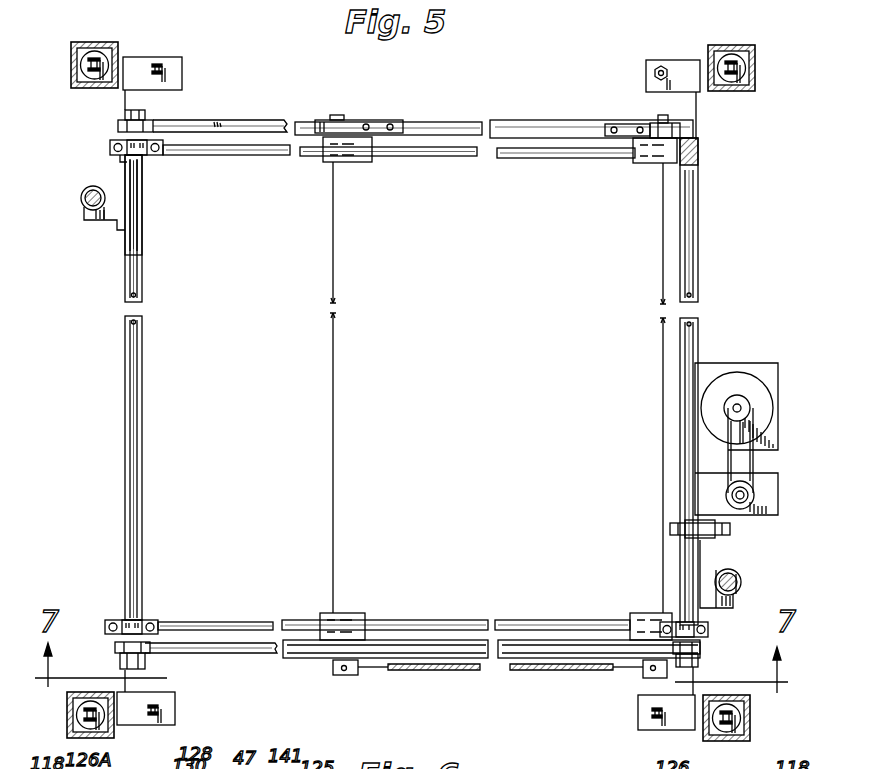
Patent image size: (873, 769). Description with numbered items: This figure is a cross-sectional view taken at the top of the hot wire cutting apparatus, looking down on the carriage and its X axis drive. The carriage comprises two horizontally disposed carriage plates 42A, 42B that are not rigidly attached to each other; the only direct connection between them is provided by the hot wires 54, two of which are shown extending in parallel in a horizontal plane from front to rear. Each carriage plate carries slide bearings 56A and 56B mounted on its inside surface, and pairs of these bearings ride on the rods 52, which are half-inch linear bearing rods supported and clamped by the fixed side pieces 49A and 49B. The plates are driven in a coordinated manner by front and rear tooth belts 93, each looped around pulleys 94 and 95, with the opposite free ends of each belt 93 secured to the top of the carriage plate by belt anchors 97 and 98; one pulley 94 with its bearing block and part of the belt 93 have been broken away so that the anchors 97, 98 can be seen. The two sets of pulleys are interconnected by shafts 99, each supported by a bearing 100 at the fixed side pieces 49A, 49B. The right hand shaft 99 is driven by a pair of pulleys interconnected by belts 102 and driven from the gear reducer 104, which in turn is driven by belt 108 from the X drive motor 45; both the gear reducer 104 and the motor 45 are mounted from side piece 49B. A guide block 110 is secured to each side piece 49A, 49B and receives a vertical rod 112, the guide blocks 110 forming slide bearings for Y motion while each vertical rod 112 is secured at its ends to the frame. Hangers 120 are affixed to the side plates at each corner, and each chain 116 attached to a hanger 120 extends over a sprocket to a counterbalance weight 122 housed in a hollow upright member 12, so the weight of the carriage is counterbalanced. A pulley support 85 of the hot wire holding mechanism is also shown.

The upright member 12 is at (108, 40).
The chain 116 is at (77, 48).
The counterbalance weight 122 is at (83, 88).
The hanger 120 is at (178, 65).
The pulley 94 is at (125, 114).
The tooth belt 93 is at (237, 125).
The belt anchor 97 is at (385, 120).
The belt anchor 98 is at (617, 124).
The bearing 100 is at (110, 147).
The rod 52 is at (538, 158).
The carriage plate 42B is at (520, 120).
The carriage plate 42A is at (512, 640).
The slide bearing 56B is at (352, 162).
The slide bearing 56A is at (352, 613).
The pulley support 85 is at (345, 675).
The pulley 95 is at (700, 660).
The side piece 49A is at (125, 300).
The side piece 49B is at (698, 300).
The shaft 99 is at (130, 378).
The hot wire 54 is at (333, 385).
The vertical rod 112 is at (81, 197).
The guide block 110 is at (86, 213).
The X drive motor 45 is at (741, 385).
The belt 108 is at (754, 462).
The gear reducer 104 is at (755, 505).
The belt 102 is at (732, 530).